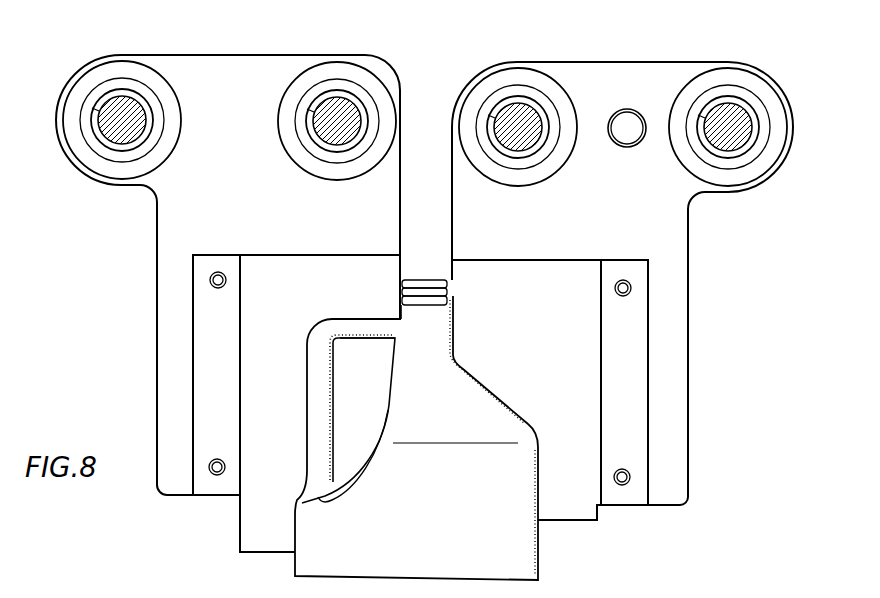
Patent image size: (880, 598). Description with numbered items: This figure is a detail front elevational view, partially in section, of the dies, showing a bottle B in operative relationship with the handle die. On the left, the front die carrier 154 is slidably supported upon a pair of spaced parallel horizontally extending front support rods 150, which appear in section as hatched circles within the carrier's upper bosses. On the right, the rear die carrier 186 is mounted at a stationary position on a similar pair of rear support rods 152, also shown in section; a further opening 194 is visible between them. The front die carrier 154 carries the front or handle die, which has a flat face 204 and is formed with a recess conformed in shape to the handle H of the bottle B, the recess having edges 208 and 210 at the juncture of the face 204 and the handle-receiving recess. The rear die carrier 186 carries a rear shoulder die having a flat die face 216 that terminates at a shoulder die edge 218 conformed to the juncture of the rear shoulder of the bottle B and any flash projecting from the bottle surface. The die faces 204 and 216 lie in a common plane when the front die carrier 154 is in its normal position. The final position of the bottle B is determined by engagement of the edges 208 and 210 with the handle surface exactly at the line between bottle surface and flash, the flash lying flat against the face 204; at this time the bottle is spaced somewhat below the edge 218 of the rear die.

The front die carrier 154 is at (230, 64).
The front support rods 150 is at (320, 123).
The rear die carrier 186 is at (632, 74).
The rear support rods 152 is at (517, 147).
The aperture 194 is at (623, 138).
The flat face 204 is at (317, 291).
The flat die face 216 is at (533, 297).
The edge 208 is at (366, 318).
The edge 210 is at (375, 339).
The shoulder die edge 218 is at (480, 388).
The handle H is at (312, 417).
The bottle B is at (404, 553).